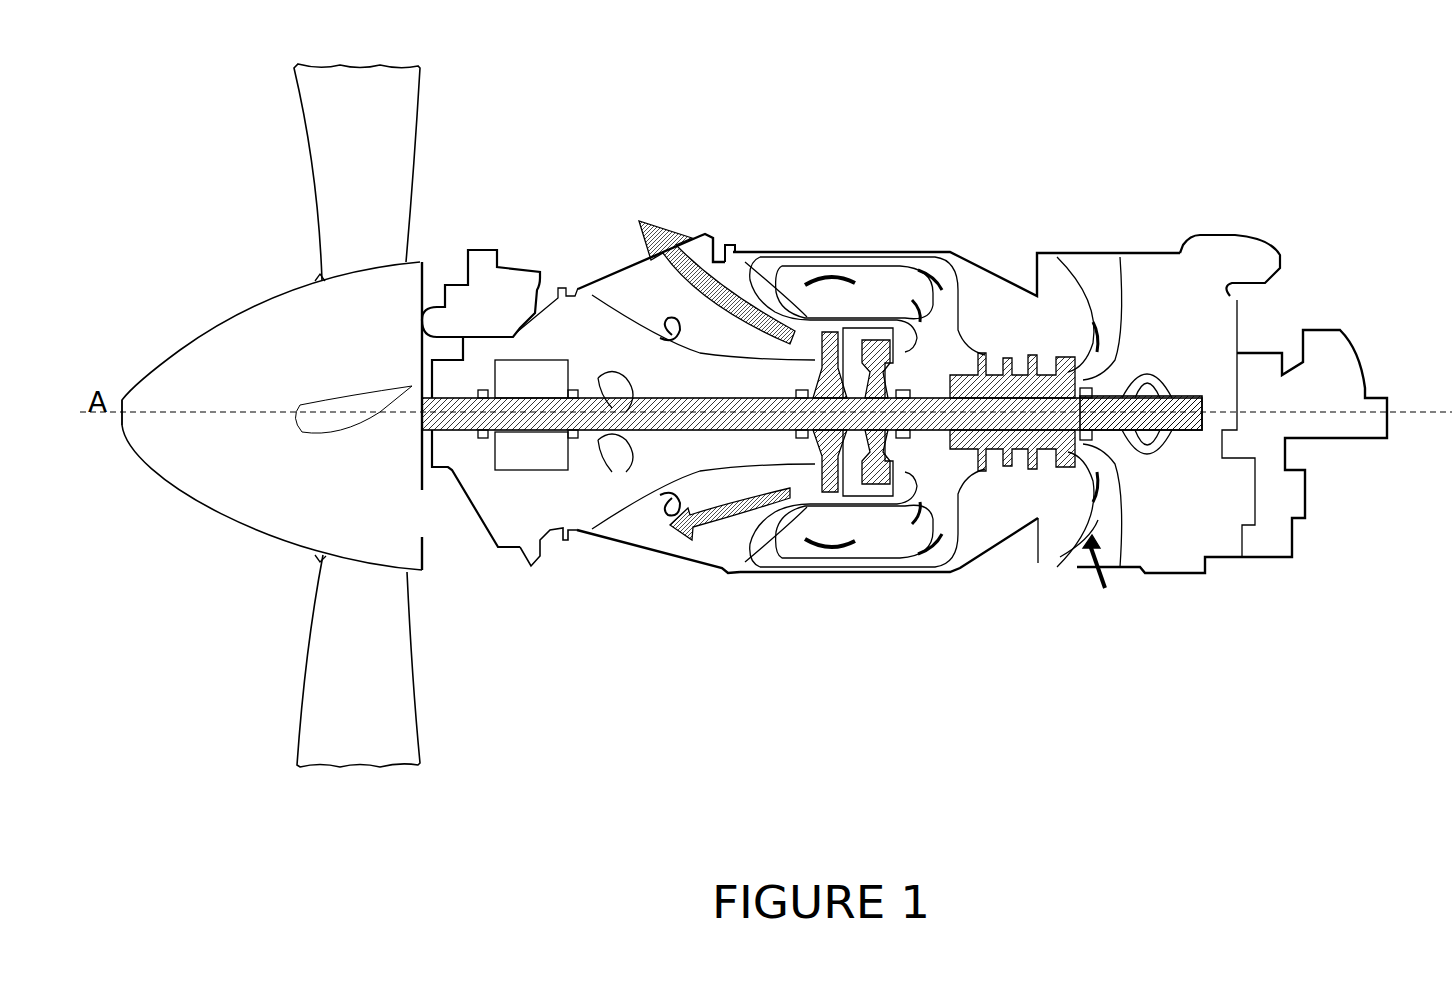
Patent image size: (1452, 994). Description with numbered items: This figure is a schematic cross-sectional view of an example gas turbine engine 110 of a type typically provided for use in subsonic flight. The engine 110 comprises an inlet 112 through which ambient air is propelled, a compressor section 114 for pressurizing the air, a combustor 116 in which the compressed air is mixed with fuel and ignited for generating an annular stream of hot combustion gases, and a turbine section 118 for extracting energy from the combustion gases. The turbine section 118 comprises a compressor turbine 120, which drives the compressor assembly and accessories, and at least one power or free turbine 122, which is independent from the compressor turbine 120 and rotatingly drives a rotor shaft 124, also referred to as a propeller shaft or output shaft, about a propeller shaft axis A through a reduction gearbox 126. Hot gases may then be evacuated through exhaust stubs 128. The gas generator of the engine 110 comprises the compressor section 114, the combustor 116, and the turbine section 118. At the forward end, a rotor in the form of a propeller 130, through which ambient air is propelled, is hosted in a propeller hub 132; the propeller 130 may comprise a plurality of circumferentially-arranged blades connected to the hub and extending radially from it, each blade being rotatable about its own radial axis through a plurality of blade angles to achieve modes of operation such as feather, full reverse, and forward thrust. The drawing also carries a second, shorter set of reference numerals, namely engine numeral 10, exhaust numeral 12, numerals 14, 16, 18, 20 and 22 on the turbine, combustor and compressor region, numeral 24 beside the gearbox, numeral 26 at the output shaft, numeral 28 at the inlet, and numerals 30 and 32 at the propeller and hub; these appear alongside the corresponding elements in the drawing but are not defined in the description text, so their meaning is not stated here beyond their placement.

The gas turbine engine 10 is at (772, 145).
The exhaust section 12 is at (1131, 166).
The turbine section 14 is at (990, 297).
The combustor 16 is at (890, 290).
The turbine 18 is at (858, 430).
The shaft 20 is at (907, 443).
The compressor 22 is at (825, 420).
The reduction gearbox 24 is at (548, 457).
The output shaft 26 is at (530, 457).
The air inlet 28 is at (612, 232).
The propeller 30 is at (325, 143).
The nacelle 32 is at (245, 322).
The gas turbine engine 110 is at (695, 306).
The inlet 112 is at (1159, 323).
The compressor section 114 is at (1082, 275).
The combustor 116 is at (1038, 362).
The turbine section 118 is at (1012, 500).
The compressor turbine 120 is at (1039, 518).
The power or free turbine 122 is at (851, 468).
The rotor shaft 124 is at (473, 460).
The reduction gearbox 126 is at (667, 536).
The exhaust stubs 128 is at (708, 306).
The propeller 130 is at (326, 397).
The propeller hub 132 is at (192, 317).